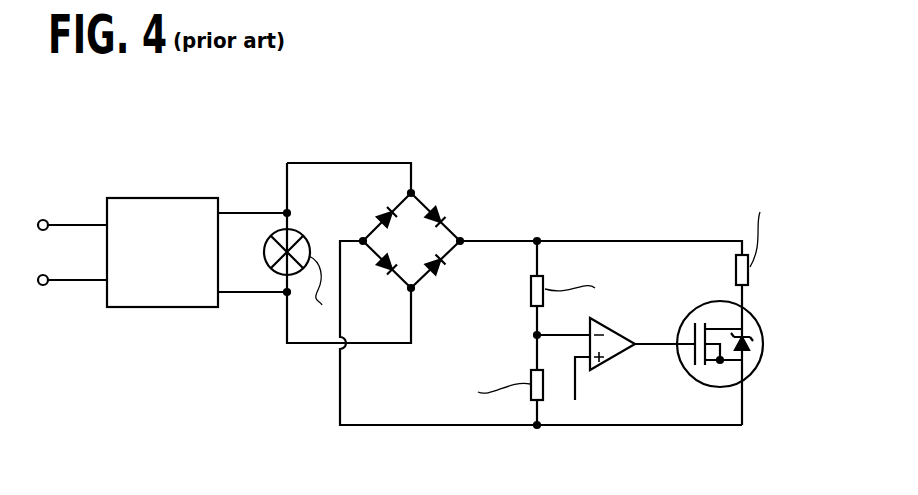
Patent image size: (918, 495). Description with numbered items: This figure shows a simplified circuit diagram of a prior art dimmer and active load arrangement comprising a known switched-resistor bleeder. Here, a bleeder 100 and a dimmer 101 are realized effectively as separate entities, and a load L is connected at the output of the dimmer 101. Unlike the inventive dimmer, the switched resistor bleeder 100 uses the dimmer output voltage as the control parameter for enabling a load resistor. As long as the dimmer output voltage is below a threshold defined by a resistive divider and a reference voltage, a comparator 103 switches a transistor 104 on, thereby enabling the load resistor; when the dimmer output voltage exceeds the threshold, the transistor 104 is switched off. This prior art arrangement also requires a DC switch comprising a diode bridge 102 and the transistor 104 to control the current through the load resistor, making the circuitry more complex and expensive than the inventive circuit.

The bleeder 100 is at (613, 163).
The dimmer 101 is at (157, 198).
The diode bridge 102 is at (430, 194).
The comparator 103 is at (622, 334).
The transistor 104 is at (761, 357).